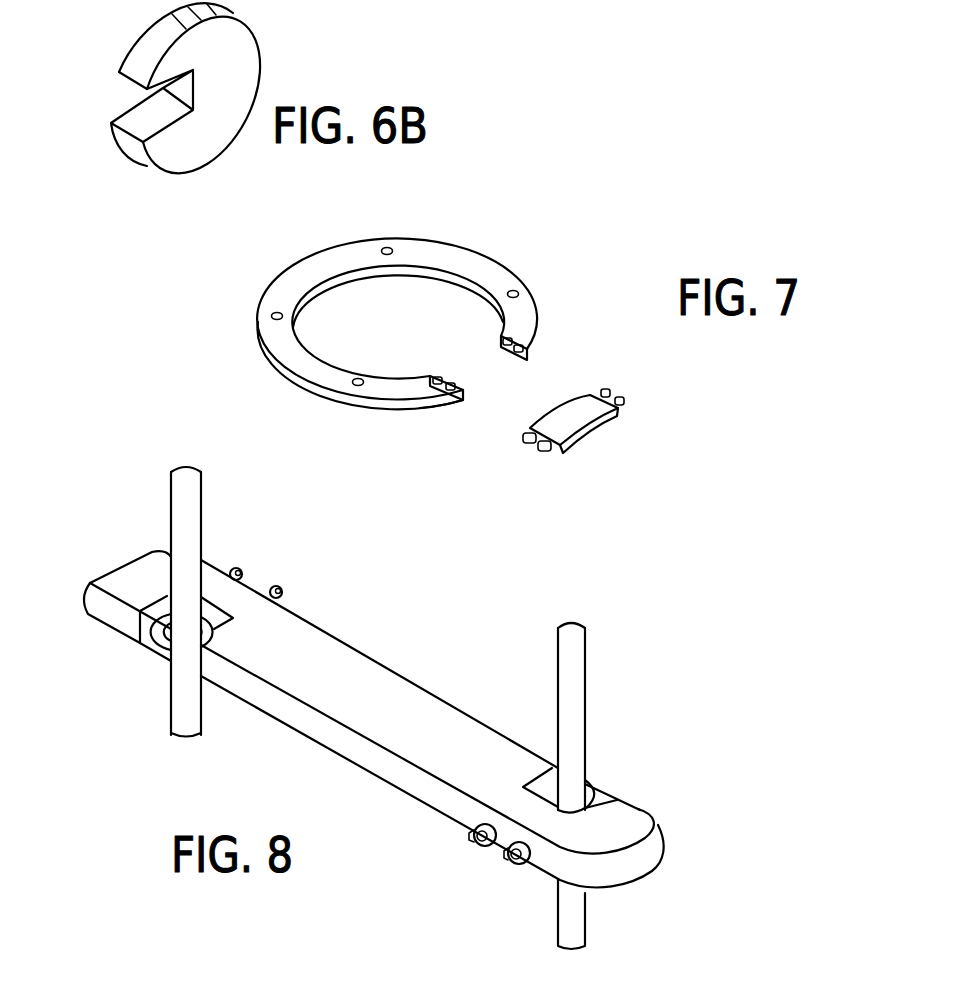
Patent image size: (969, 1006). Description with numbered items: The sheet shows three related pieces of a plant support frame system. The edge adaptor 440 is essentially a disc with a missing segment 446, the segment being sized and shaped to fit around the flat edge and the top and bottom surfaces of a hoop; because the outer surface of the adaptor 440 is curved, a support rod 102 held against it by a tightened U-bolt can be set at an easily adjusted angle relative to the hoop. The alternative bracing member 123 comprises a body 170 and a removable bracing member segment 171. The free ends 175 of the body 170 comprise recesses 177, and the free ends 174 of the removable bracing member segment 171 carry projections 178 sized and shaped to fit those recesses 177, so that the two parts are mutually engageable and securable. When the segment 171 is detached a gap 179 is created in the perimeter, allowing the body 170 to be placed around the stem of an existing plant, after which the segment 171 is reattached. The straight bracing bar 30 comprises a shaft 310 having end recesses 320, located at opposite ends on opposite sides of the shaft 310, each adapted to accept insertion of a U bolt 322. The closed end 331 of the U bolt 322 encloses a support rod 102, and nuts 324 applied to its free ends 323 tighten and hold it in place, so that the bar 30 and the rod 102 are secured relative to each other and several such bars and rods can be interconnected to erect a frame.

In FIG. 6B, the adaptor 440 is at (188, 88).
In FIG. 6B, the missing segment 446 is at (128, 97).
In FIG. 7, the split ring assembly 123 is at (479, 335).
In FIG. 7, the body 170 is at (440, 347).
In FIG. 7, the removable bracing member segment 171 is at (612, 422).
In FIG. 7, the free ends 174 is at (623, 392).
In FIG. 7, the free ends 175 is at (523, 335).
In FIG. 7, the recesses 177 is at (455, 383).
In FIG. 7, the projections 178 is at (542, 453).
In FIG. 7, the gap 179 is at (488, 365).
In FIG. 8, the bracing bar 30 is at (381, 708).
In FIG. 8, the support rod 102 is at (414, 708).
In FIG. 8, the shaft 310 is at (381, 742).
In FIG. 8, the end recesses 320 is at (610, 782).
In FIG. 8, the U bolt 322 is at (157, 648).
In FIG. 8, the free ends 323 is at (283, 593).
In FIG. 8, the nuts 324 is at (489, 840).
In FIG. 8, the closed end 331 is at (166, 657).